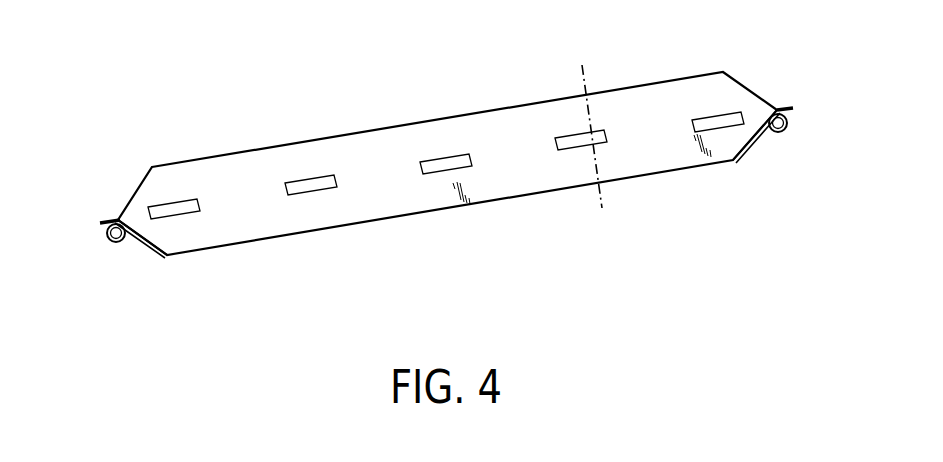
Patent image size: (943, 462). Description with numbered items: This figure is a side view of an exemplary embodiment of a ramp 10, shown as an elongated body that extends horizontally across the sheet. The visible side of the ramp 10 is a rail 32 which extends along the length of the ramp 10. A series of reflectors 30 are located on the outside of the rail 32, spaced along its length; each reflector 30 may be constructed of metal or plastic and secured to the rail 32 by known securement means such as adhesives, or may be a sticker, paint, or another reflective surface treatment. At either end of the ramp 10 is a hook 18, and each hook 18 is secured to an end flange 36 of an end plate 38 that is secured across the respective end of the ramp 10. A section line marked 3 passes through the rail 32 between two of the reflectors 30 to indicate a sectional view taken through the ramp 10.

The ramp 10 is at (508, 209).
The hook 18 is at (117, 243).
The reflector 30 is at (176, 202).
The rail 32 is at (392, 195).
The end flange 36 is at (115, 218).
The end plate 38 is at (149, 246).
The section line 3- 3 is at (582, 66).